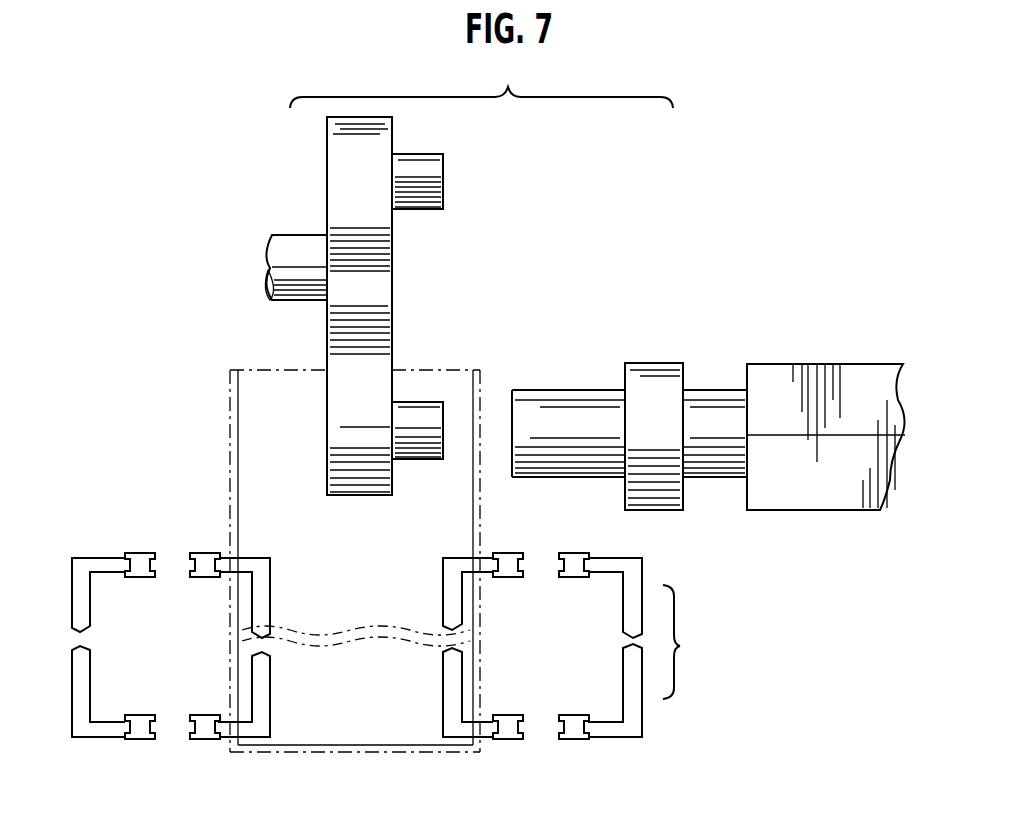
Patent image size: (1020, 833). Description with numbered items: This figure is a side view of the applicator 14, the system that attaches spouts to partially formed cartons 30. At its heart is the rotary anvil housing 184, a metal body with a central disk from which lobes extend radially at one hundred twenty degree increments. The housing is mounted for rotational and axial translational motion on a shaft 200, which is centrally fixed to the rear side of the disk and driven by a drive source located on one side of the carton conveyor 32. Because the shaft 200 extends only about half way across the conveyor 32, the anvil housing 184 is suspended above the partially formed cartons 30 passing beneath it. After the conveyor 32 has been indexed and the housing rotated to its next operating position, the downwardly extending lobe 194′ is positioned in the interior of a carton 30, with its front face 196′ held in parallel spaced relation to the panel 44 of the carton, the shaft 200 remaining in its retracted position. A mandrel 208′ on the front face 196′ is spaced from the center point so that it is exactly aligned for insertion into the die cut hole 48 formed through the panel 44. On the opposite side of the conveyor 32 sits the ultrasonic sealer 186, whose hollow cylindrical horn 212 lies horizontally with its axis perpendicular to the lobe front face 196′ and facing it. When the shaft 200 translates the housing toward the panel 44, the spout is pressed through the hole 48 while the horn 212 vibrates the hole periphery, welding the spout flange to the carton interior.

The applicator 14 is at (753, 590).
The partially formed carton 30 is at (230, 413).
The carton conveyor 32 is at (257, 728).
The panel 44 is at (480, 396).
The die cut hole 48 is at (480, 450).
The rotary anvil housing 184 is at (392, 137).
The ultrasonic sealer 186 is at (805, 364).
The lobe 194′ is at (363, 495).
The front face 196′ is at (393, 383).
The shaft 200 is at (297, 240).
The mandrel 208′ is at (430, 400).
The horn 212 is at (583, 390).